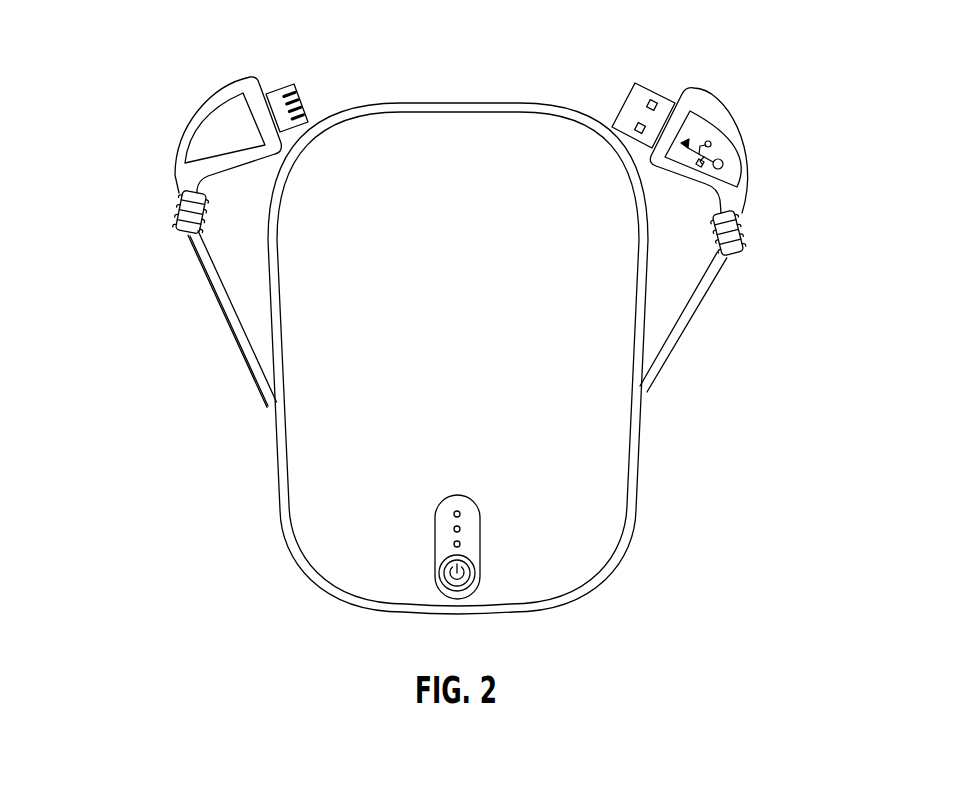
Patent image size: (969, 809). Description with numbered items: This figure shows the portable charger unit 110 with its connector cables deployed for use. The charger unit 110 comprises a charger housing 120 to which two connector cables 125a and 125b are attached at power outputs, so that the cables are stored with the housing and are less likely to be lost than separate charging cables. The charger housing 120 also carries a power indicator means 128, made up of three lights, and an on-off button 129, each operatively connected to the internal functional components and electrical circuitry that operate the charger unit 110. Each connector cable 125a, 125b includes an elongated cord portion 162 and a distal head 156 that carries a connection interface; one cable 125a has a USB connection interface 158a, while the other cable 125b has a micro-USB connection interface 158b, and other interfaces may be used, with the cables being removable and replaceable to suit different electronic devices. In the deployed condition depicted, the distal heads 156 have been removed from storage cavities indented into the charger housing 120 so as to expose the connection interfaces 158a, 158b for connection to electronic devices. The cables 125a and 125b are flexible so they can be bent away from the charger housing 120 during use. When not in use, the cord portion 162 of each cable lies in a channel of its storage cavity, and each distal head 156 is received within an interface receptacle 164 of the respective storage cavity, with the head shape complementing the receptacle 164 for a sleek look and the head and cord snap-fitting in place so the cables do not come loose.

The charger unit 110 is at (426, 331).
The charger housing 120 is at (292, 467).
The connector cable 125a is at (709, 207).
The connector cable 125b is at (233, 230).
The power indicator means 128 is at (447, 523).
The on-off button 129 is at (467, 570).
The distal head 156 is at (180, 102).
The USB connection interface 158a is at (641, 96).
The micro-USB connection interface 158b is at (267, 91).
The elongated cord portion 162 is at (243, 340).
The interface receptacle 164 is at (182, 190).